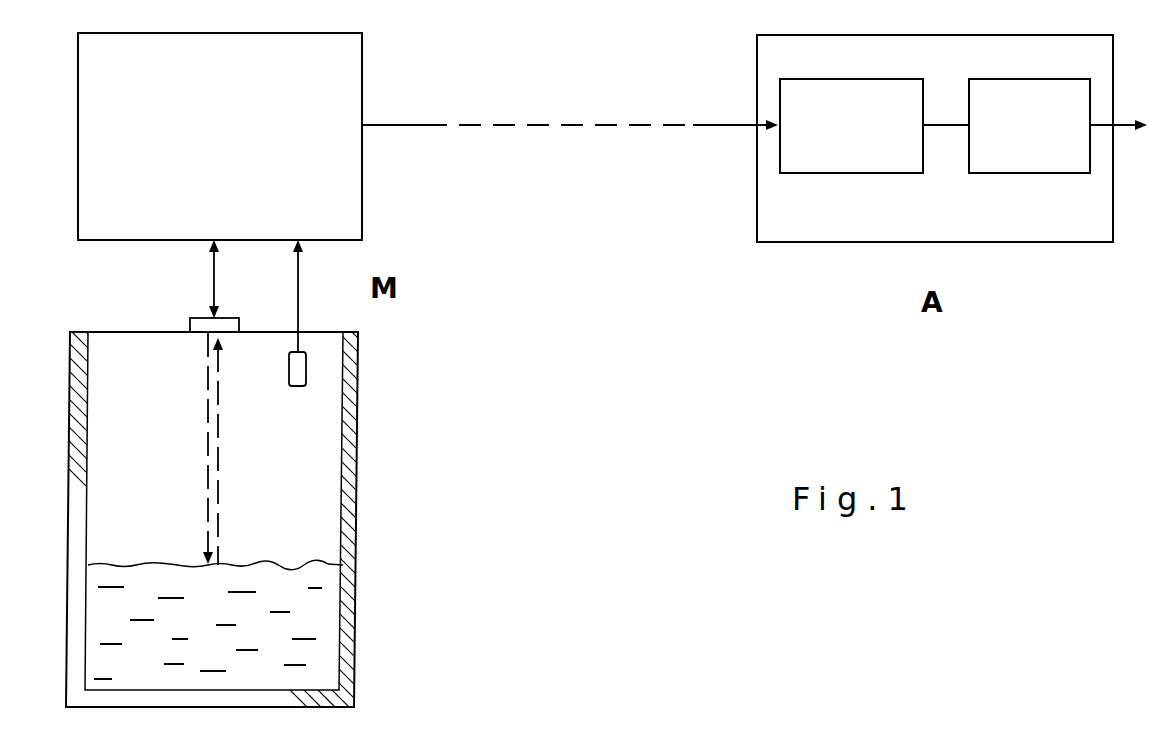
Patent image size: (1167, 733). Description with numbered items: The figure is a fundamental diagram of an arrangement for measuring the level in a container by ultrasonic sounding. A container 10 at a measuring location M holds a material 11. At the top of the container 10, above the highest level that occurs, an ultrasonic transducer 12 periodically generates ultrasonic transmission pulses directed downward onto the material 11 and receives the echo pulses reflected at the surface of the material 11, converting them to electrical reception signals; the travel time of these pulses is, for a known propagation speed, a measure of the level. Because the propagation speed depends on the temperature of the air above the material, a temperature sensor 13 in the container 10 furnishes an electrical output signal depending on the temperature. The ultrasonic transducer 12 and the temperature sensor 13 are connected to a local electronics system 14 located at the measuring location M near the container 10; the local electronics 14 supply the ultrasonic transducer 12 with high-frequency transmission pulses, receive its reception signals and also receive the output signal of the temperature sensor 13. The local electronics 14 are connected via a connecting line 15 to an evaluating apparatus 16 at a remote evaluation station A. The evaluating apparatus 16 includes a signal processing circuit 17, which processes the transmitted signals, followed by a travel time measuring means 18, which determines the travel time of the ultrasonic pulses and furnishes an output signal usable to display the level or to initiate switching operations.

The container 10 is at (352, 452).
The material 11 is at (326, 613).
The ultrasonic transducer 12 is at (198, 322).
The temperature sensor 13 is at (308, 376).
The local electronics system 14 is at (352, 71).
The connecting line 15 is at (565, 123).
The evaluating apparatus 16 is at (968, 43).
The signal processing circuit 17 is at (815, 87).
The travel time measuring means 18 is at (1040, 87).